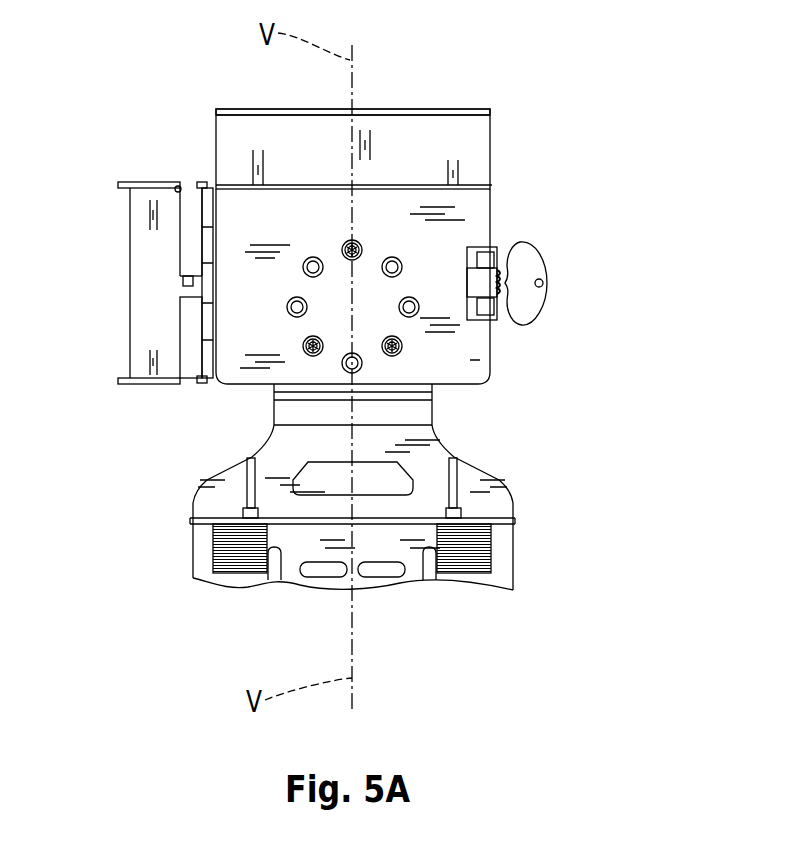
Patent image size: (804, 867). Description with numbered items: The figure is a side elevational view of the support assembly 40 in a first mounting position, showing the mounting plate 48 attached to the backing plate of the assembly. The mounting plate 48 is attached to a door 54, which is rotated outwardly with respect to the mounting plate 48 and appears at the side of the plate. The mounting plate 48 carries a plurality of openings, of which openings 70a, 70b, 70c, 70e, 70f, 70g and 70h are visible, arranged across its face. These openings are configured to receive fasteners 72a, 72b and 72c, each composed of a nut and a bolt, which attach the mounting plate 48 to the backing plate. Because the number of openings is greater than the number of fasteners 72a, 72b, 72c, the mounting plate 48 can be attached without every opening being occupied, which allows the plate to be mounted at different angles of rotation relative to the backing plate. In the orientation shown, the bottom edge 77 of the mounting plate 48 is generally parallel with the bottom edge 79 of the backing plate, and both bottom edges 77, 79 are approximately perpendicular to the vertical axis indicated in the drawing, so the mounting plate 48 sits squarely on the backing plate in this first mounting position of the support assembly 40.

The support assembly 40 is at (535, 92).
The mounting plate 48 is at (480, 202).
The door 54 is at (137, 190).
The opening 70a is at (355, 373).
The opening 70b is at (403, 264).
The opening 70c is at (420, 307).
The opening 70e is at (345, 245).
The opening 70f is at (303, 265).
The opening 70g is at (287, 307).
The opening 70h is at (303, 346).
The fastener 72a is at (400, 353).
The fastener 72b is at (302, 355).
The fastener 72c is at (356, 243).
The bottom edge of mounting plate 77 is at (440, 387).
The bottom edge of backing plate 79 is at (327, 425).